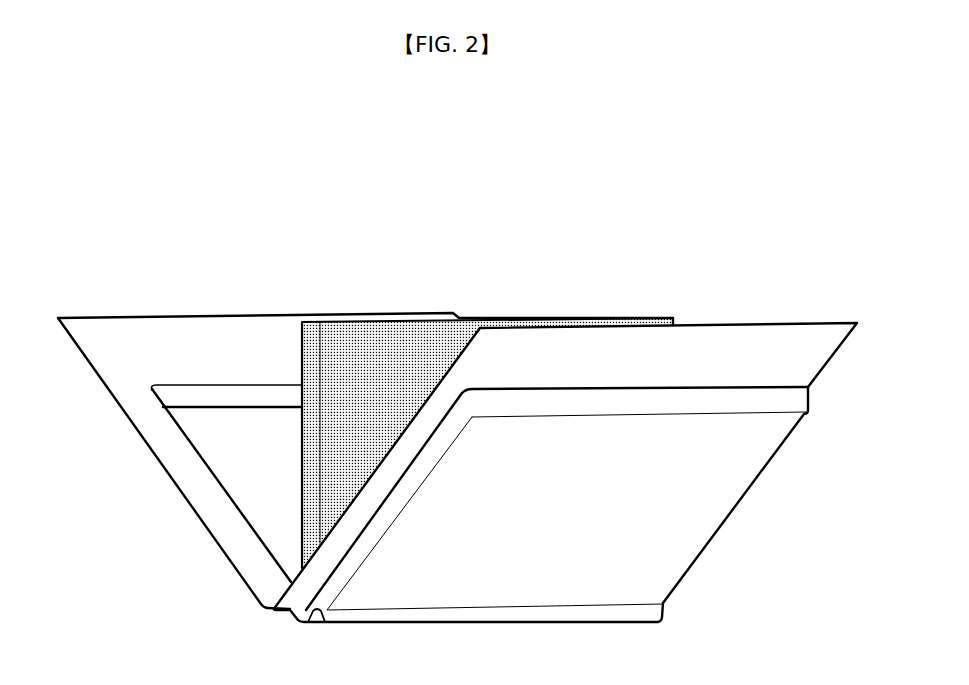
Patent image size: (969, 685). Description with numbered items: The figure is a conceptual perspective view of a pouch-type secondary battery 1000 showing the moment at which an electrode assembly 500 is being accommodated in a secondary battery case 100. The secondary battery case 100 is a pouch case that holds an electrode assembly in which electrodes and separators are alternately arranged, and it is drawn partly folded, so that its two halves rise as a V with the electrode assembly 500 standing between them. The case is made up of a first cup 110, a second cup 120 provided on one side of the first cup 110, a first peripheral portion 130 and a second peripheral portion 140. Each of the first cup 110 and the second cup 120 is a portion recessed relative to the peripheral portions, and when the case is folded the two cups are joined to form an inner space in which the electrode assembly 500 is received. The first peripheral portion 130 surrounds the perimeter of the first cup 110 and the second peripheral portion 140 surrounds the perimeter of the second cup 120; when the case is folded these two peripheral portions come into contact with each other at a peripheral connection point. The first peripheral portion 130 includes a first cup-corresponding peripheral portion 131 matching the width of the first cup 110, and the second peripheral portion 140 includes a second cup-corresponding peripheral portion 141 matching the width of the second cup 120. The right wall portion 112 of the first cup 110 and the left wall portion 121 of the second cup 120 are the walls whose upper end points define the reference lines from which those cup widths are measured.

The secondary battery 1000 is at (108, 130).
The secondary battery case 100 is at (142, 487).
The first cup 110 is at (543, 587).
The right wall portion 112 is at (768, 402).
The second cup 120 is at (202, 423).
The left wall portion 121 is at (258, 393).
The first peripheral portion 130 is at (713, 338).
The first cup-corresponding peripheral portion 131 is at (350, 525).
The second peripheral portion 140 is at (121, 331).
The second cup-corresponding peripheral portion 141 is at (227, 533).
The electrode assembly 500 is at (395, 340).